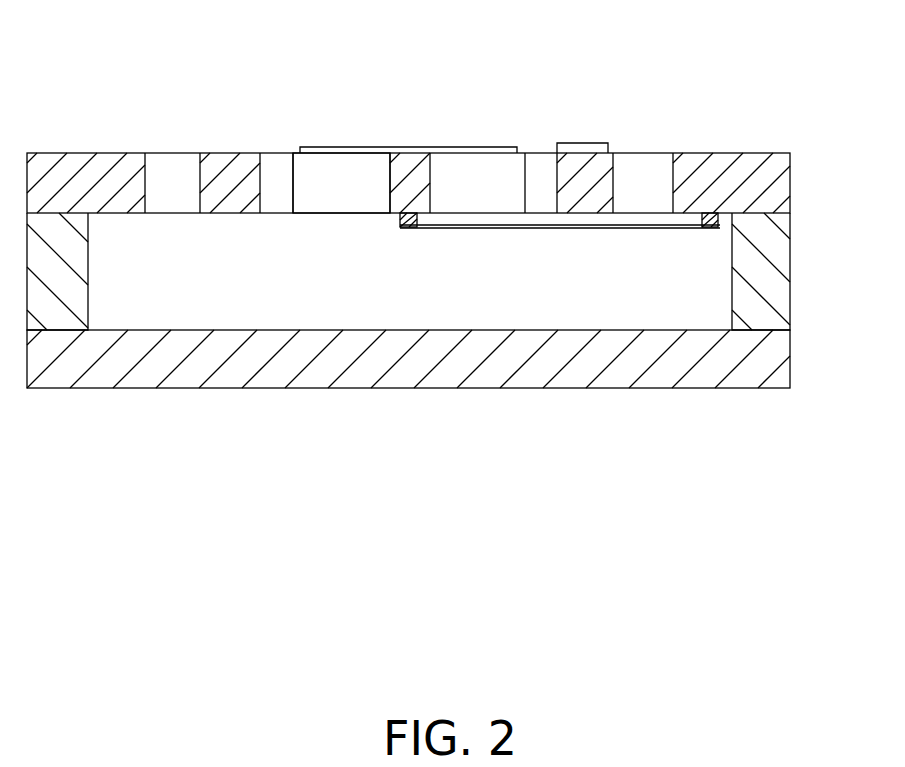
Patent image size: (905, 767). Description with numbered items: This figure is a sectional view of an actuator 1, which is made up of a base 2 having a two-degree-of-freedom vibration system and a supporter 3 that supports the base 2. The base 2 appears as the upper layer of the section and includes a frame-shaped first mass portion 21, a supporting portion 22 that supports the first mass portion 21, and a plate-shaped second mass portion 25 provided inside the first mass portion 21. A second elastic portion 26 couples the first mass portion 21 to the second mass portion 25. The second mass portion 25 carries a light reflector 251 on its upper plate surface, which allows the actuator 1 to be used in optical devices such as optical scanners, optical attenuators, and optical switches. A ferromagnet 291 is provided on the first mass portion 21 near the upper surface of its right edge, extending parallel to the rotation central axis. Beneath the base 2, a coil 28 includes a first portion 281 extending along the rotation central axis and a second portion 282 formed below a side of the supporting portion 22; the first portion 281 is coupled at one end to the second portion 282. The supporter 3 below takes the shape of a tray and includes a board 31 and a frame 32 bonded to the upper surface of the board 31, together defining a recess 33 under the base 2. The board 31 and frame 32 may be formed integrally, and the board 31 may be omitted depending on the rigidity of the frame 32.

The actuator 1 is at (746, 78).
The base 2 is at (797, 175).
The supporter 3 is at (797, 275).
The first mass portion 21 is at (229, 175).
The supporting portion 22 is at (78, 172).
The second mass portion 25 is at (322, 185).
The light reflector 251 is at (386, 148).
The second elastic portion 26 is at (417, 182).
The coil 28 is at (399, 229).
The first portion 281 is at (413, 229).
The second portion 282 is at (710, 229).
The ferromagnet 291 is at (583, 151).
The board 31 is at (770, 373).
The frame 32 is at (766, 312).
The recess 33 is at (590, 293).